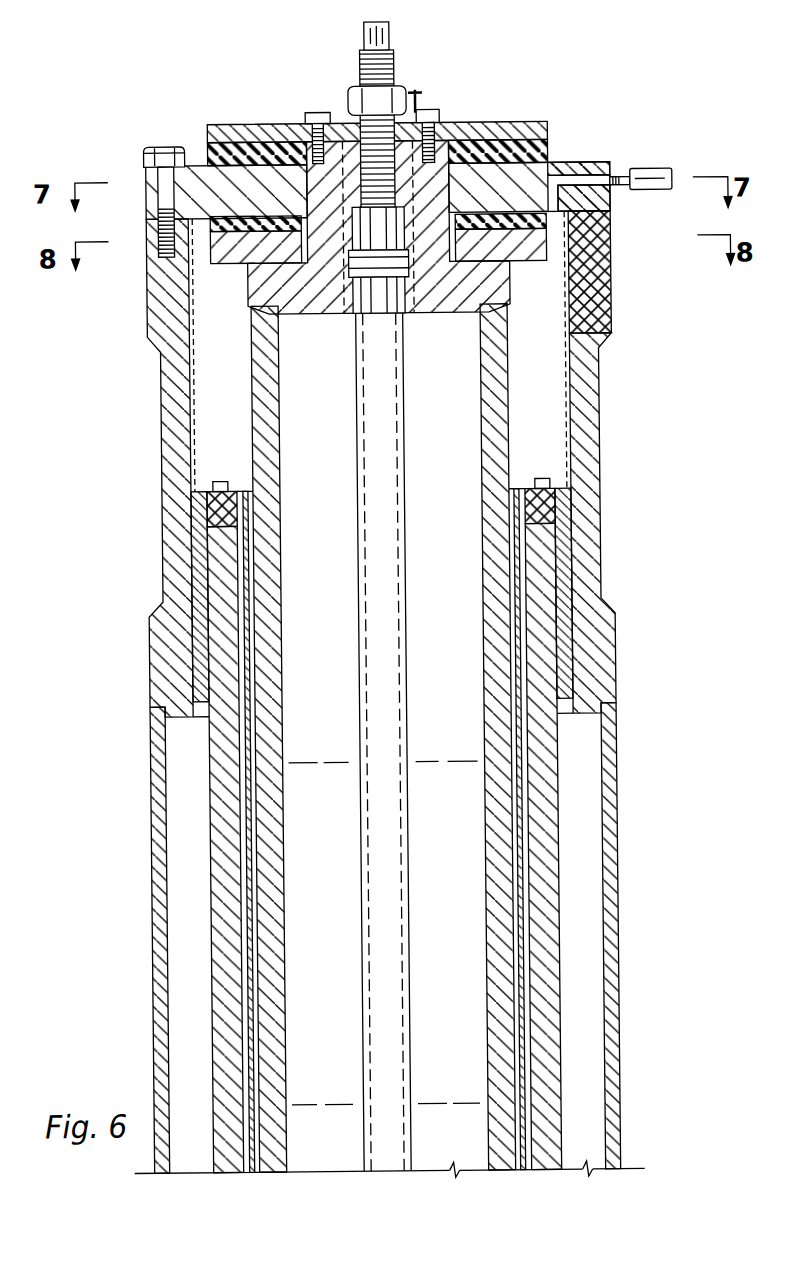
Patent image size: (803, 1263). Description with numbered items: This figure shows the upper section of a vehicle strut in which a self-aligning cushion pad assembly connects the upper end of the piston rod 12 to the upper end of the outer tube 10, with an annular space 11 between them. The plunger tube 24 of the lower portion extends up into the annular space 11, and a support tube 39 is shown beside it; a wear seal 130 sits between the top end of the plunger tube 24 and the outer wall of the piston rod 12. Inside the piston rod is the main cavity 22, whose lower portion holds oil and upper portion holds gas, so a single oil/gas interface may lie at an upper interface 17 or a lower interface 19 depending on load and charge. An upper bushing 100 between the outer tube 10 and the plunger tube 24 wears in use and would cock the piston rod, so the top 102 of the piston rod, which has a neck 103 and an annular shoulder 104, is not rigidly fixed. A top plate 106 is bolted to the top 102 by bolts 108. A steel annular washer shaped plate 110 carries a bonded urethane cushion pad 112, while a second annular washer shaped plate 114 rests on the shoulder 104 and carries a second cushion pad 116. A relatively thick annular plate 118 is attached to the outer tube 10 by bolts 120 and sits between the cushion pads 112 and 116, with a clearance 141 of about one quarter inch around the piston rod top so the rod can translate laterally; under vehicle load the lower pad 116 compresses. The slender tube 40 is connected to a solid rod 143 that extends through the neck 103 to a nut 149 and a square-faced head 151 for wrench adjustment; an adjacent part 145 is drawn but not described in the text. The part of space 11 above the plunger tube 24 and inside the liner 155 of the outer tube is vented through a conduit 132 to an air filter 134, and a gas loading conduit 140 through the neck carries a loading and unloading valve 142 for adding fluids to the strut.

The outer tube 10 is at (617, 735).
The annular space 11 is at (546, 368).
The piston rod 12 is at (499, 825).
The upper interface 17 is at (467, 762).
The lower interface 19 is at (469, 1104).
The main cavity 22 is at (342, 1146).
The plunger tube 24 is at (545, 900).
The support tube 39 is at (524, 850).
The slender tube 40 is at (397, 492).
The upper bushing 100 is at (565, 527).
The top of the piston rod 102 is at (487, 131).
The neck 103 is at (348, 130).
The annular shoulder 104 is at (501, 261).
The top plate 106 is at (527, 121).
The bolts 108 is at (316, 122).
The steel annular washer shaped plate 110 is at (559, 140).
The cushion pad 112 is at (556, 154).
The second annular washer shaped plate 114 is at (609, 264).
The second cushion pad 116 is at (603, 237).
The thick annular plate 118 is at (584, 156).
The bolts 120 is at (174, 145).
The wear seal 130 is at (518, 499).
The conduit 132 is at (606, 205).
The air filter 134 is at (677, 179).
The gas loading conduit 140 is at (422, 316).
The clearance 141 is at (436, 232).
The loading and unloading valve 142 is at (428, 92).
The solid rod 143 is at (346, 195).
The rod upper section 145 is at (354, 215).
The nut 149 is at (397, 68).
The head 151 is at (389, 26).
The liner 155 is at (610, 330).